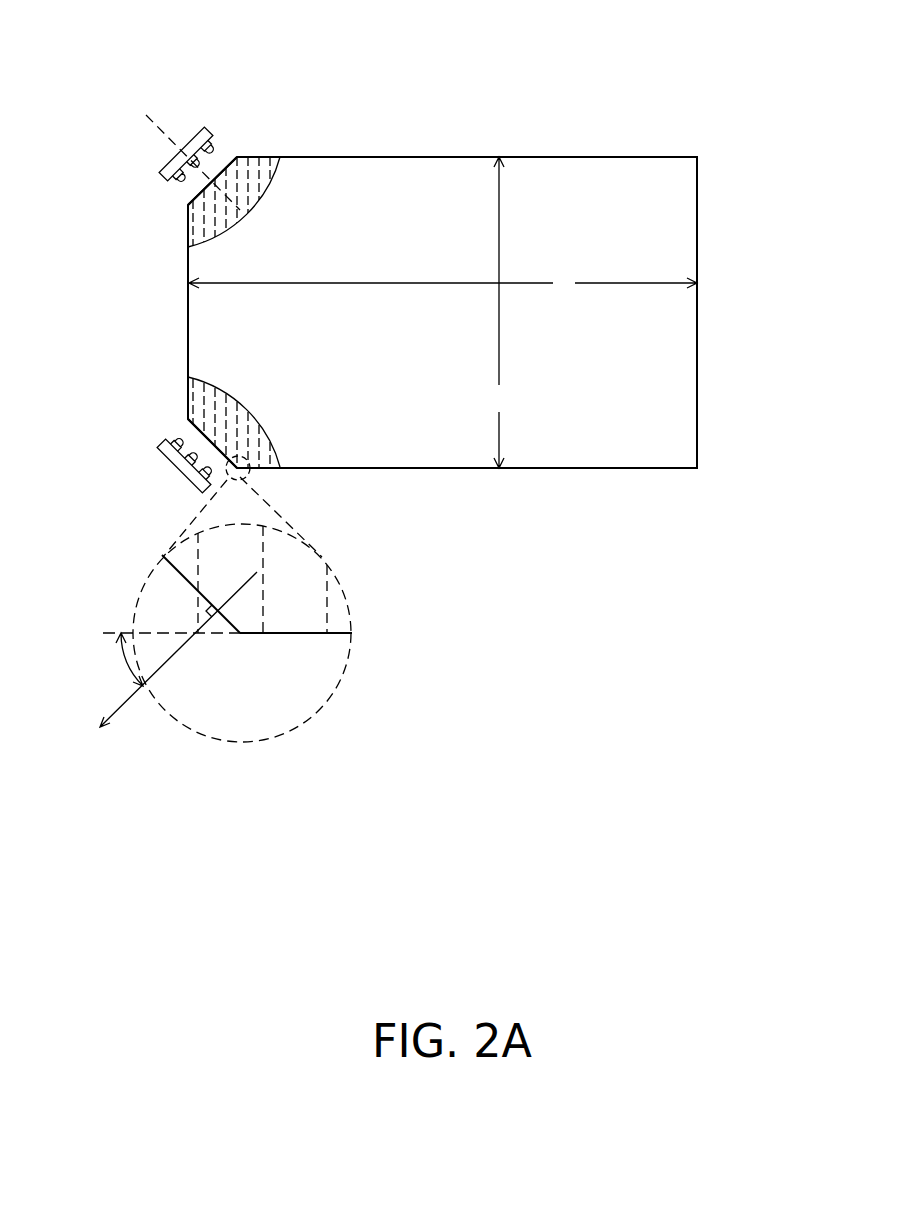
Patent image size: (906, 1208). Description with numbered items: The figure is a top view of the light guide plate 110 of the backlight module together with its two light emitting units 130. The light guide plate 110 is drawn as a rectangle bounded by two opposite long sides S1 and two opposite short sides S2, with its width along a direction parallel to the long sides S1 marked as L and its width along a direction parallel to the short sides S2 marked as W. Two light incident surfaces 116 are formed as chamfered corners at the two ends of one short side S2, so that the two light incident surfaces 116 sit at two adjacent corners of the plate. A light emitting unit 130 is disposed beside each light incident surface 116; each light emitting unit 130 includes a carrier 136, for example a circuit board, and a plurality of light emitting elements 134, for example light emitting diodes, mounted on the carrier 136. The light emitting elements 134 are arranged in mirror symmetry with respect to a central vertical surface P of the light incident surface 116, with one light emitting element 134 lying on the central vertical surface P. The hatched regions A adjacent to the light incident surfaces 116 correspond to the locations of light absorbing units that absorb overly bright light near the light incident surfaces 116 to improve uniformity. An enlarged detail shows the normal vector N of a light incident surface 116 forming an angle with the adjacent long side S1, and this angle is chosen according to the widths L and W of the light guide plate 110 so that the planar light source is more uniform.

The light guide plate 110 is at (692, 413).
The light incident surface 116 is at (178, 208).
The light emitting unit 130 is at (180, 246).
The light emitting element 134 is at (215, 145).
The carrier 136 is at (207, 130).
The long side S1 is at (540, 147).
The short side S2 is at (177, 320).
The region A is at (246, 190).
The central vertical surface P is at (160, 128).
The normal vector N is at (167, 663).
The width along the long sides L is at (443, 283).
The width along the short sides W is at (499, 312).